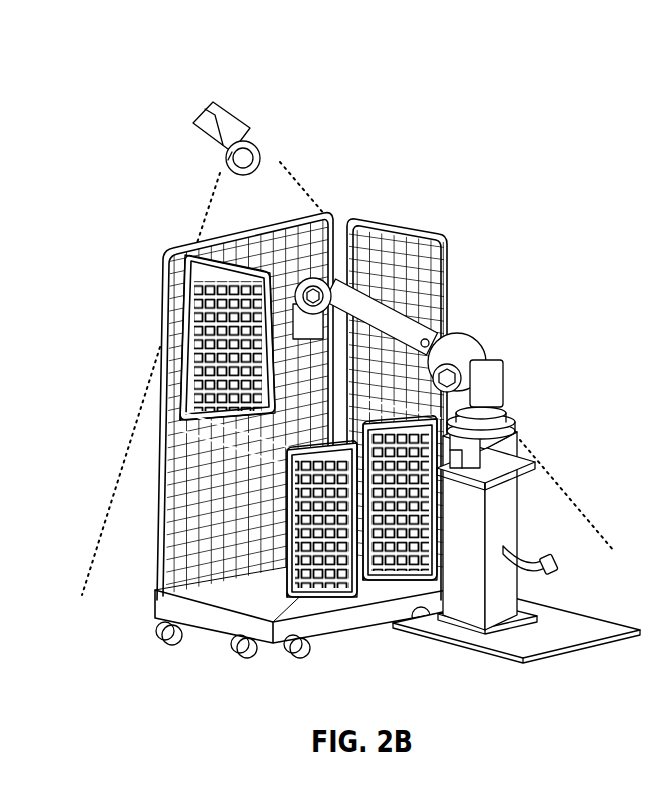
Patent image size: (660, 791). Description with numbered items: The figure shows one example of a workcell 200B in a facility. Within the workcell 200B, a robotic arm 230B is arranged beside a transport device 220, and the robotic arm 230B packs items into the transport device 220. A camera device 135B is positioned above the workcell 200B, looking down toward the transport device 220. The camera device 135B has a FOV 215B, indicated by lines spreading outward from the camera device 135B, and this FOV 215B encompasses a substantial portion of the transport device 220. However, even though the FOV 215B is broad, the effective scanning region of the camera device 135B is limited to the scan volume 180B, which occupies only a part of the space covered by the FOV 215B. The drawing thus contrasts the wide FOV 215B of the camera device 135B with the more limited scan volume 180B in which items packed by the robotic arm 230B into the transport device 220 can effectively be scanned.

The workcell 200B is at (528, 114).
The camera device 135B is at (205, 118).
The FOV 215B is at (233, 221).
The transport device 220 is at (373, 218).
The robotic arm 230B is at (459, 326).
The scan volume 180B is at (338, 593).